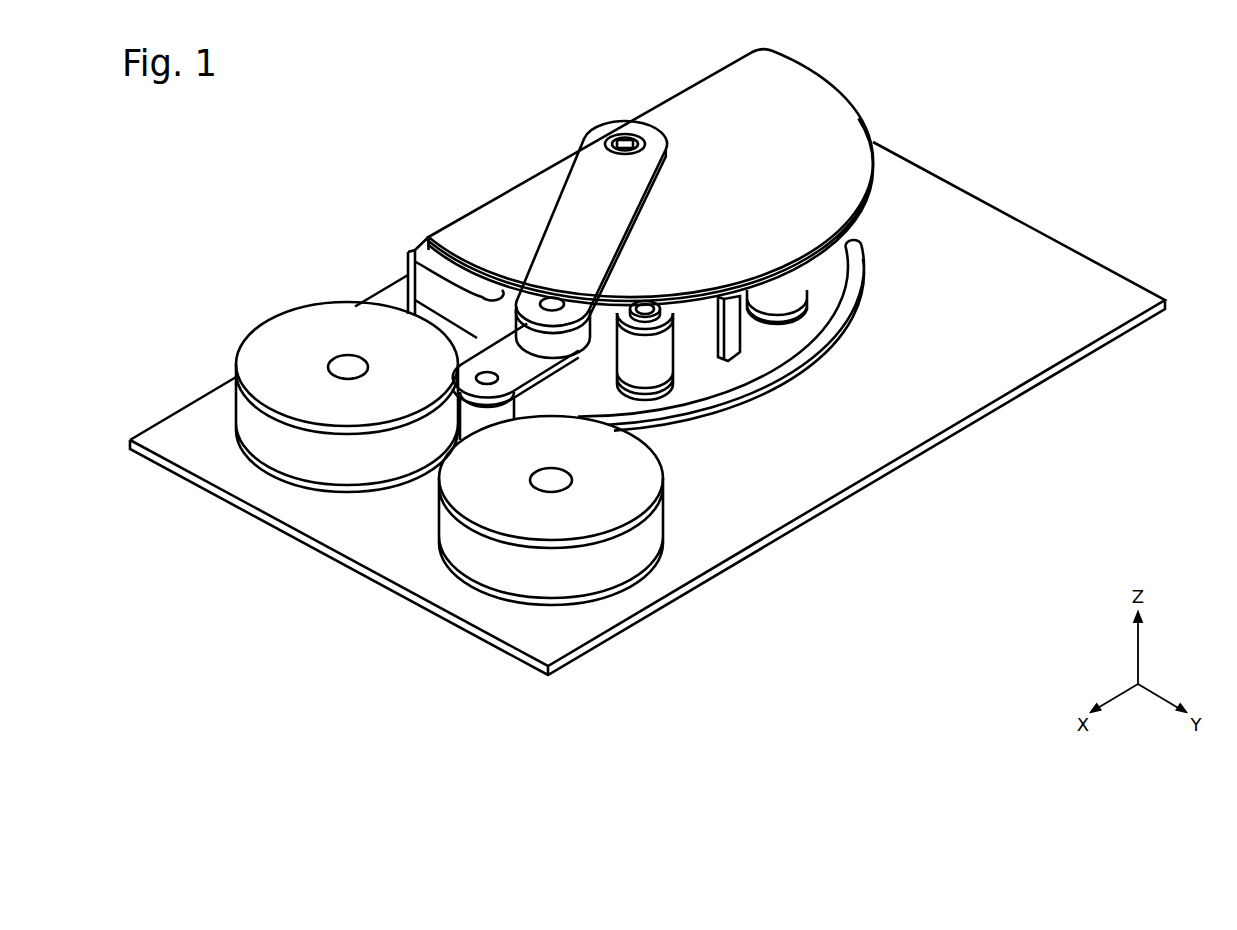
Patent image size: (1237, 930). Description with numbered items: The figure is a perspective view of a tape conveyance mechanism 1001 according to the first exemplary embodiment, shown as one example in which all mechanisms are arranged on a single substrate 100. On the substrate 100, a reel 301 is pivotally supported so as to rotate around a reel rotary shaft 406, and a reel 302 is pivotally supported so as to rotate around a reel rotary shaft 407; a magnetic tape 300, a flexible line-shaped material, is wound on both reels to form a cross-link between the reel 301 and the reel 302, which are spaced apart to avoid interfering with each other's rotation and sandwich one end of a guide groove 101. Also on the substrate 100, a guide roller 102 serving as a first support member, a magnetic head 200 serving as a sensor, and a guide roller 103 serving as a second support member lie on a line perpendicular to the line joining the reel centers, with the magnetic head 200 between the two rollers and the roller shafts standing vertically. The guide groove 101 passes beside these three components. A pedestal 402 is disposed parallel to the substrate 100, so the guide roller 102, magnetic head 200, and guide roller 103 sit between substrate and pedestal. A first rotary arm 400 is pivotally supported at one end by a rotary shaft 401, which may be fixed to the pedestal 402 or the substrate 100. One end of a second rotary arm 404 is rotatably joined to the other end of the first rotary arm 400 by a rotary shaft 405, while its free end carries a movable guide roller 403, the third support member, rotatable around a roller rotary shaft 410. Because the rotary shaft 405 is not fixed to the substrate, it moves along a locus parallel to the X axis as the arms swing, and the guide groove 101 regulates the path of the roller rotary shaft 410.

The substrate 100 is at (1049, 384).
The guide groove 101 is at (712, 432).
The guide roller 102 is at (650, 400).
The guide roller 103 is at (752, 292).
The magnetic head 200 is at (737, 362).
The magnetic tape 300 is at (301, 442).
The reel 301 is at (305, 493).
The reel 302 is at (515, 580).
The first rotary arm 400 is at (525, 179).
The rotary shaft 401 is at (627, 133).
The pedestal 402 is at (853, 96).
The movable guide roller 403 is at (407, 340).
The second rotary arm 404 is at (433, 405).
The rotary shaft 405 is at (552, 297).
The reel rotary shaft 406 is at (348, 372).
The reel rotary shaft 407 is at (556, 487).
The roller rotary shaft 410 is at (492, 377).
The tape conveyance mechanism 1001 is at (1100, 245).